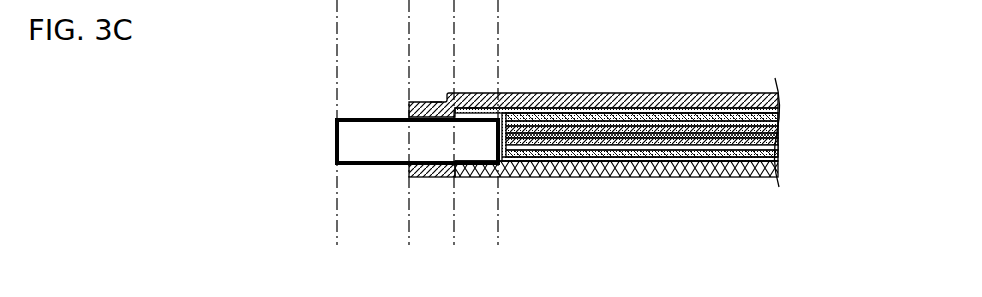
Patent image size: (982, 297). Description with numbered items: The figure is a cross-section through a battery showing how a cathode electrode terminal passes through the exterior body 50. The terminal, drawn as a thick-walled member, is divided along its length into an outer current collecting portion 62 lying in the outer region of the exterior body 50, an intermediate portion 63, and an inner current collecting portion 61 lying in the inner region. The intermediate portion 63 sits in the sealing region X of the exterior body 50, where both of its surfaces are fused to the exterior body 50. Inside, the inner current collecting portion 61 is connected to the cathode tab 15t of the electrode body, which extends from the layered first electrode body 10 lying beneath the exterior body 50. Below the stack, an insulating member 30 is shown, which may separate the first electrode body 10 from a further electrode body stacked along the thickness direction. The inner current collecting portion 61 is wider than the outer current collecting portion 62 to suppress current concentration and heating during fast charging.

The exterior body 50 is at (703, 97).
The first electrode body 10 is at (787, 110).
The insulating member 30 is at (703, 170).
The outer current collecting portion 62 is at (370, 143).
The intermediate portion 63 is at (433, 143).
The inner current collecting portion 61 is at (482, 143).
The sealing region X is at (436, 101).
The cathode tab 15t is at (472, 107).